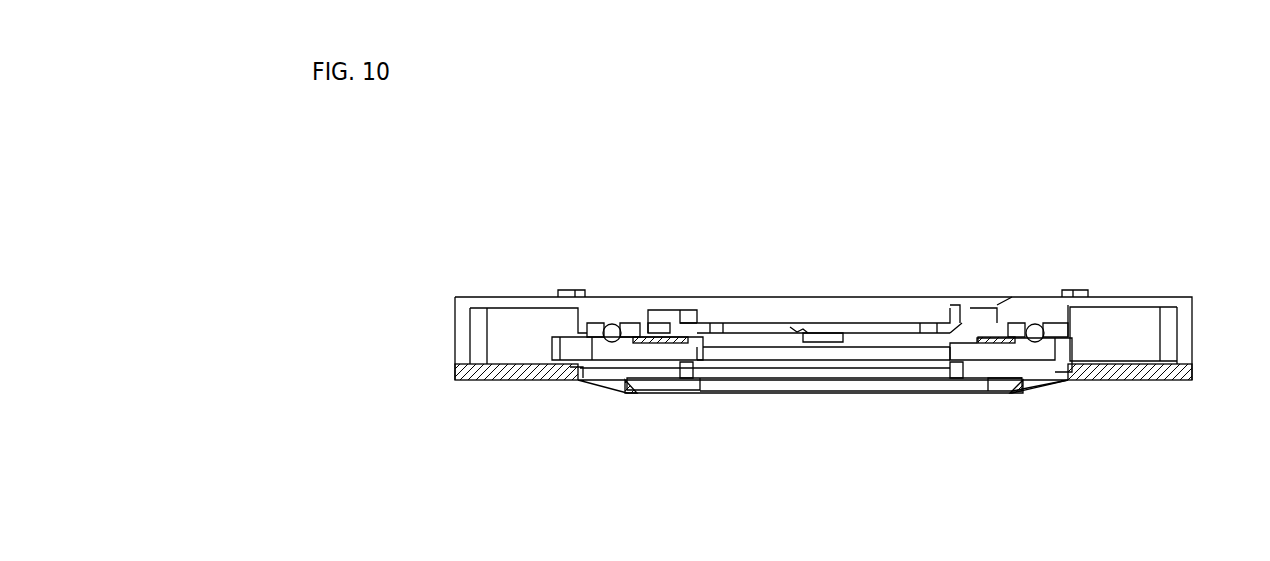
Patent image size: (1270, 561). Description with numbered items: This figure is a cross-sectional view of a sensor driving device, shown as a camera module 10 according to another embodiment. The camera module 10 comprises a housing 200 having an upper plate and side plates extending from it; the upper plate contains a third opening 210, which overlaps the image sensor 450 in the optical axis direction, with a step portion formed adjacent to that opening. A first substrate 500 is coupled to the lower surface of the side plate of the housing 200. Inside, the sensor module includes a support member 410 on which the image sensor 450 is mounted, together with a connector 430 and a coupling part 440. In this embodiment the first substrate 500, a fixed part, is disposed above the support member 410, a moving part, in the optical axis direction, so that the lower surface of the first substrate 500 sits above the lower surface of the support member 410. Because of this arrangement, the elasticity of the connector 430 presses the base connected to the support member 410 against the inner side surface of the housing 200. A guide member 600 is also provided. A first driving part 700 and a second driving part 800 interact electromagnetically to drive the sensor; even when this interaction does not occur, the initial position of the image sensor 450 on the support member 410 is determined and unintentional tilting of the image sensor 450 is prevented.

The camera module 10 is at (526, 153).
The housing 200 is at (1117, 298).
The third opening 210 is at (804, 326).
The support member 410 is at (873, 385).
The connector 430 is at (1047, 385).
The coupling part 440 is at (957, 362).
The image sensor 450 is at (770, 375).
The first substrate 500 is at (1142, 380).
The guide member 600 is at (1036, 328).
The first driving part 700 is at (657, 327).
The second driving part 800 is at (658, 342).